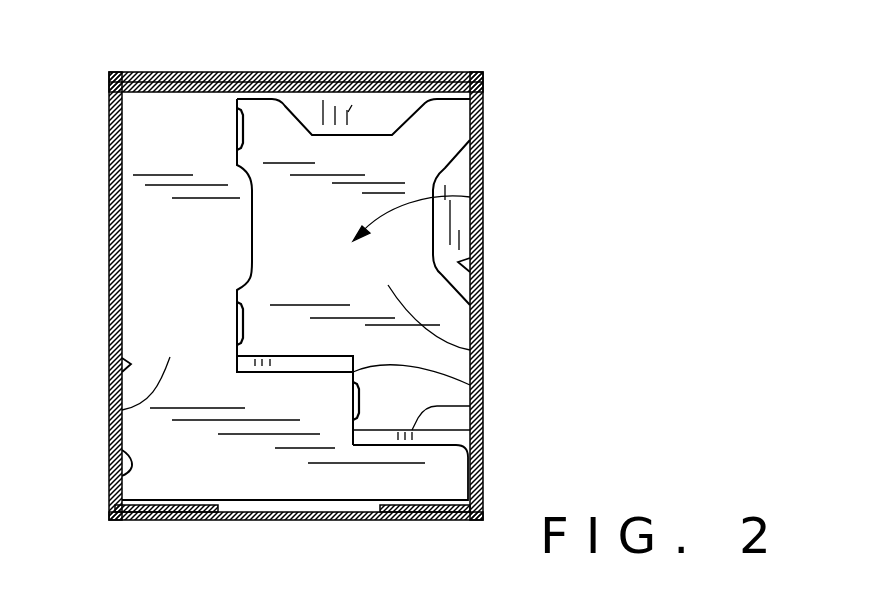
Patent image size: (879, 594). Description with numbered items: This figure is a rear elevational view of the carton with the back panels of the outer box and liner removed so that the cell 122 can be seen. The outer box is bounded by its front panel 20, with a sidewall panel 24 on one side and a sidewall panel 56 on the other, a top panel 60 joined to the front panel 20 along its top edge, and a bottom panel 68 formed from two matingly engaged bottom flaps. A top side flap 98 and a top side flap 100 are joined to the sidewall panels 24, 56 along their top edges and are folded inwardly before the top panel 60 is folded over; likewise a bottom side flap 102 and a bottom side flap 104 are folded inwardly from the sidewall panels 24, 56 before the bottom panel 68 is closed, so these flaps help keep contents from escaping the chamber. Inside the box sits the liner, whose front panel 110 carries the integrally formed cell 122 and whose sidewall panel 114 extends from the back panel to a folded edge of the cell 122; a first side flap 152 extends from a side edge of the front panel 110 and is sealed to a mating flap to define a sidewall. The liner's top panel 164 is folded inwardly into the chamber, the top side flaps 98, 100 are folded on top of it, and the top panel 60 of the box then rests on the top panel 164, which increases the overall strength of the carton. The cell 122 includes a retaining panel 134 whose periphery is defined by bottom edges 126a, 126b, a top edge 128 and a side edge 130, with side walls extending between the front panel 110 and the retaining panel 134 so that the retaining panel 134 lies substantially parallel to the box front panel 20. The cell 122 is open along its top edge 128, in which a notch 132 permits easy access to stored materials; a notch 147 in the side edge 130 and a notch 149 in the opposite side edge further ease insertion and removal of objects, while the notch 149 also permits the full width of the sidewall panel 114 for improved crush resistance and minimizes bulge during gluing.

The top side flap 100 is at (266, 295).
The top panel 164 is at (214, 47).
The top edge 128 is at (288, 108).
The notch 132 is at (332, 134).
The front panel 20 is at (348, 112).
The top panel 60 is at (346, 69).
The top side flap 98 is at (445, 72).
The side edge 130 is at (237, 165).
The notch 147 is at (253, 236).
The cell 122 is at (470, 197).
The notch 149 is at (433, 238).
The sidewall panel 114 is at (462, 265).
The sidewall panel 56 is at (111, 318).
The sidewall panel 24 is at (470, 300).
The bottom edge 126a is at (280, 356).
The retaining panel 134 is at (470, 350).
The first side flap 152 is at (122, 361).
The front panel 110 is at (122, 410).
The bottom edge 126b is at (470, 408).
The bottom side flap 104 is at (197, 505).
The bottom panel 68 is at (320, 520).
The bottom side flap 102 is at (425, 505).